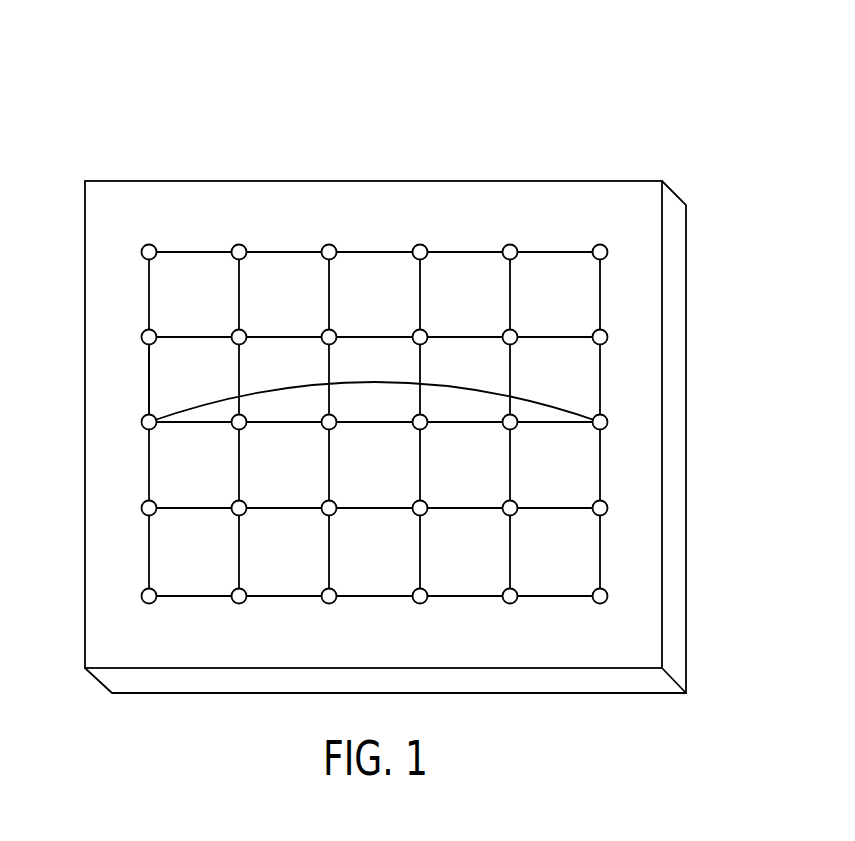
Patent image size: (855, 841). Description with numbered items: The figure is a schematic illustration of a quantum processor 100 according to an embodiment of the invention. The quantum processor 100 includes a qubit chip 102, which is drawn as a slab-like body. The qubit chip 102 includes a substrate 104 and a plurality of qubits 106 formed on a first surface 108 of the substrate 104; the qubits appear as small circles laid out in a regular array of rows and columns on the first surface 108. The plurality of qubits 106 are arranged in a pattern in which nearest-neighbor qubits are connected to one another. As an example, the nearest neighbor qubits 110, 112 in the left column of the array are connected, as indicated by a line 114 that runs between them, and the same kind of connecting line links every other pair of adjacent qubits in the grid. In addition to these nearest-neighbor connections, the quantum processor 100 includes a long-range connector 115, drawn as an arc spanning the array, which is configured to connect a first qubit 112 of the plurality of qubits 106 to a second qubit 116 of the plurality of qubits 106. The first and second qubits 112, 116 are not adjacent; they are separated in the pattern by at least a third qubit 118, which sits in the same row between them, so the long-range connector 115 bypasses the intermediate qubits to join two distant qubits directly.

The quantum processor 100 is at (398, 112).
The qubit chip 102 is at (620, 181).
The substrate 104 is at (676, 196).
The plurality of qubits 106 is at (291, 211).
The first surface 108 is at (645, 465).
The nearest neighbor qubit 110 is at (142, 335).
The first qubit 112 is at (142, 420).
The line 114 is at (149, 387).
The long-range connector 115 is at (430, 382).
The second qubit 116 is at (607, 420).
The third qubit 118 is at (232, 425).